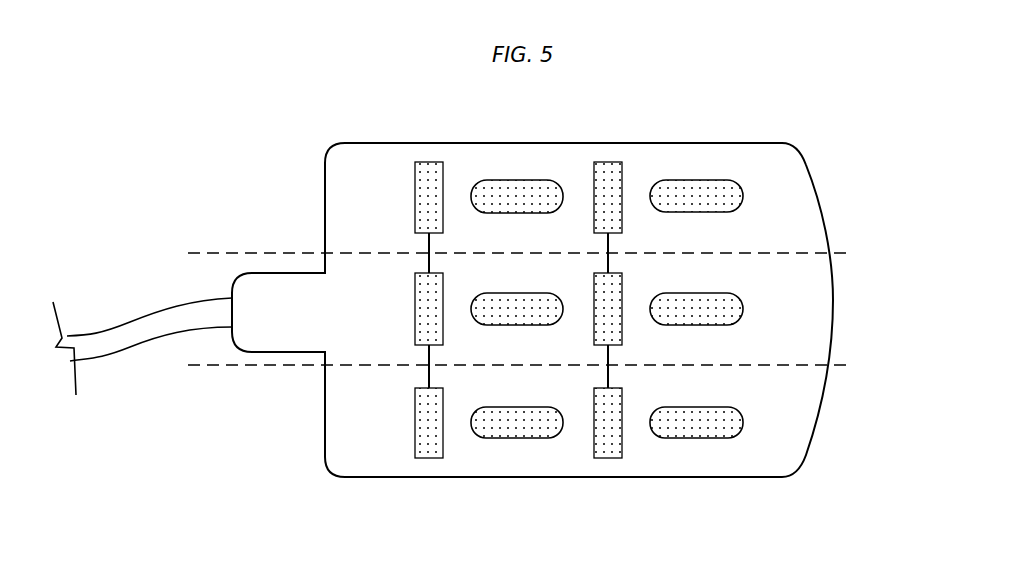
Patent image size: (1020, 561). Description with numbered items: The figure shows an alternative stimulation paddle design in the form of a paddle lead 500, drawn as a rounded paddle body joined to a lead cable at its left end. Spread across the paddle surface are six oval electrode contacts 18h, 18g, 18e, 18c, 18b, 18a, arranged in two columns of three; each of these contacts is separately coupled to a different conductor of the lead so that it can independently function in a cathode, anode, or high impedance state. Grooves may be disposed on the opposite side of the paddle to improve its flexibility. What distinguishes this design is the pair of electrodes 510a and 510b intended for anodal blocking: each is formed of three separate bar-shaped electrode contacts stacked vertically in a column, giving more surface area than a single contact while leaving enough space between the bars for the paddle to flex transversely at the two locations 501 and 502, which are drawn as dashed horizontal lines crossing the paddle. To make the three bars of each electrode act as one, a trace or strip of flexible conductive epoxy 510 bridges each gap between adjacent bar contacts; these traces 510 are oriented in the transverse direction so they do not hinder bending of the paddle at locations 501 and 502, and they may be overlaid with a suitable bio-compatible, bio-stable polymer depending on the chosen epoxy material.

The paddle lead 500 is at (380, 90).
The flex location 501 is at (258, 250).
The flex location 502 is at (282, 370).
The trace or strip of flexible conductive epoxy 510 is at (425, 248).
The electrode 510a is at (415, 195).
The electrode 510b is at (608, 162).
The electrode contact 18h is at (506, 180).
The electrode contact 18g is at (742, 198).
The electrode contact 18e is at (535, 293).
The electrode contact 18c is at (744, 306).
The electrode contact 18b is at (515, 438).
The electrode contact 18a is at (742, 420).